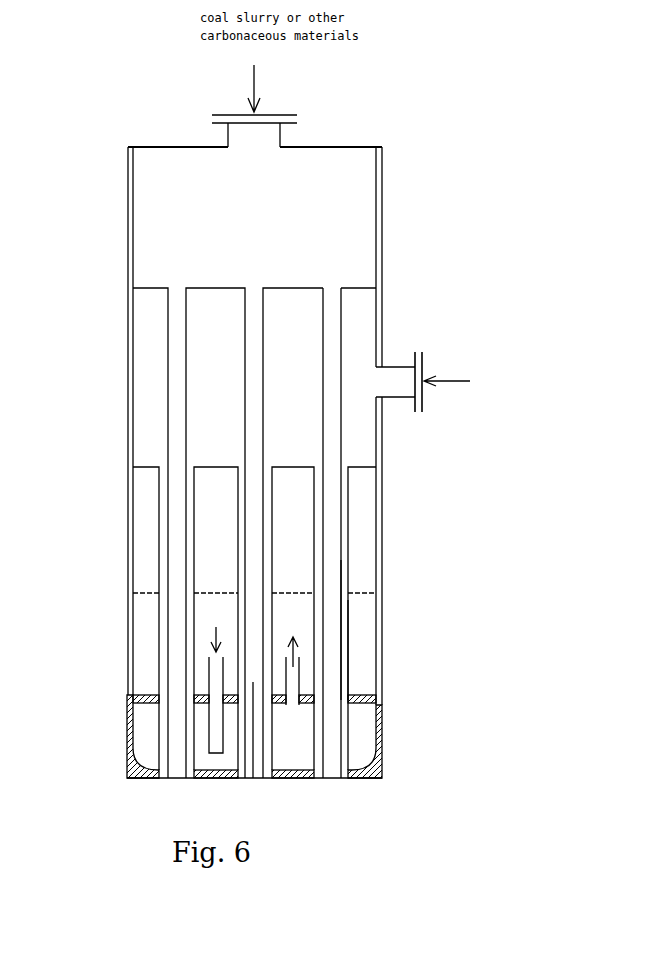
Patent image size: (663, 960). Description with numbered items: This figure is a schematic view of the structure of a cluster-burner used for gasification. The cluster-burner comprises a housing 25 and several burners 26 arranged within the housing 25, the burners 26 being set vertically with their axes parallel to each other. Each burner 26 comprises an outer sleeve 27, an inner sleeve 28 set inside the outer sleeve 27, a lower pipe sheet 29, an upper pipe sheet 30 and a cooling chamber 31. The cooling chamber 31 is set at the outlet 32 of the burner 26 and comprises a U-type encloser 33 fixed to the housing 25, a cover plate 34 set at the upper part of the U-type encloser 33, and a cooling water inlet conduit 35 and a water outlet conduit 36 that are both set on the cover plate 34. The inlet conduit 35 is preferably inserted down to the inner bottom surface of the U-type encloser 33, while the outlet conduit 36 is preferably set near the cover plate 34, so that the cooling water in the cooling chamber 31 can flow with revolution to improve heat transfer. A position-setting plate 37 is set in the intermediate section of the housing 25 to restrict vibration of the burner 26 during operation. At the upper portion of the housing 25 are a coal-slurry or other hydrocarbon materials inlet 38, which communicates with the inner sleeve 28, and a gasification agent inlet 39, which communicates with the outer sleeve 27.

The housing 25 is at (378, 543).
The burner 26 is at (330, 535).
The outer sleeve 27 is at (348, 645).
The inner sleeve 28 is at (340, 630).
The lower pipe sheet 29 is at (213, 467).
The upper pipe sheet 30 is at (293, 287).
The cooling chamber 31 is at (292, 747).
The outlet 32 is at (332, 747).
The U-type encloser 33 is at (378, 772).
The cover plate 34 is at (388, 701).
The cooling water inlet conduit 35 is at (210, 660).
The water outlet conduit 36 is at (287, 663).
The position-setting plate 37 is at (217, 593).
The coal-slurry or other hydrocarbon materials inlet 38 is at (265, 120).
The gasification agent inlet 39 is at (421, 382).